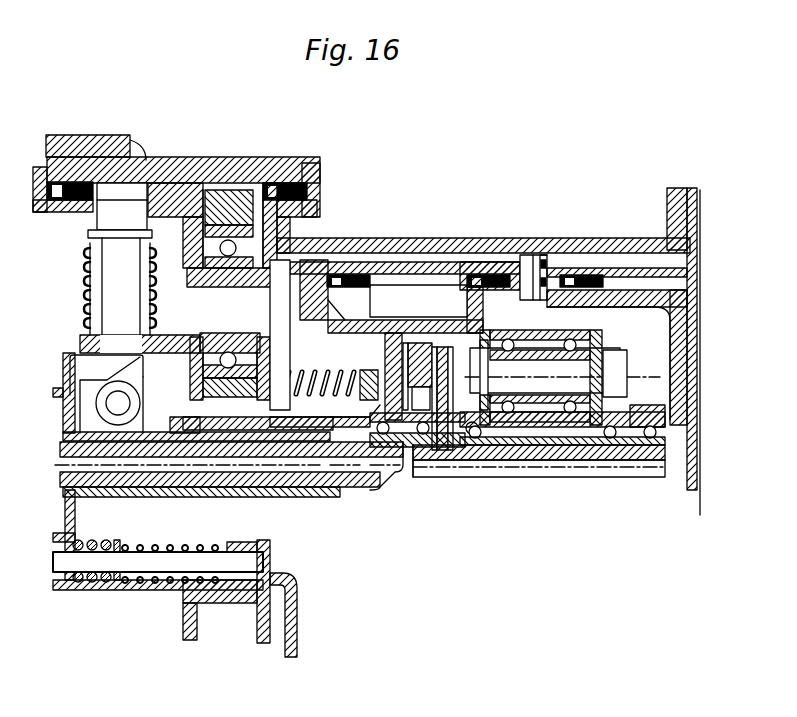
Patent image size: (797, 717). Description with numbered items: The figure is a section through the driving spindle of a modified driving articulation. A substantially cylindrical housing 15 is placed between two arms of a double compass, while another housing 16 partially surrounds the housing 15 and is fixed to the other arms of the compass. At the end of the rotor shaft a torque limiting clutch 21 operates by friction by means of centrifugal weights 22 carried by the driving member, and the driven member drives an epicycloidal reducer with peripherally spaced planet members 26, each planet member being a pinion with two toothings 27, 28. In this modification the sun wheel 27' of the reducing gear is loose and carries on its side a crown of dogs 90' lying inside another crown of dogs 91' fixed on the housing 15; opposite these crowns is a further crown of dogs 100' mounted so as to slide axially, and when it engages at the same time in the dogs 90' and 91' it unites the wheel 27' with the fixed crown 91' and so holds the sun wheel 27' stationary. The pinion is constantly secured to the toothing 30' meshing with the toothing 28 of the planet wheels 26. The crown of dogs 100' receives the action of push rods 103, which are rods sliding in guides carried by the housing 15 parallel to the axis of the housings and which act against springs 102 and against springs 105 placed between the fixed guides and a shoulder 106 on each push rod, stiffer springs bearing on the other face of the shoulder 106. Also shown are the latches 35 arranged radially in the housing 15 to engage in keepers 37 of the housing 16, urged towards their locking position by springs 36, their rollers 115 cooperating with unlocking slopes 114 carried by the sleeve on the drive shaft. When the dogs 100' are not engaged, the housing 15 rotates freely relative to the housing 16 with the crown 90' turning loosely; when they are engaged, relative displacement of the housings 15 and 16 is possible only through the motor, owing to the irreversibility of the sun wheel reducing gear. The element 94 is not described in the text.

The housing 15 is at (672, 210).
The housing 16 is at (255, 172).
The torque limiting clutch 21 is at (440, 345).
The centrifugal weights 22 is at (418, 345).
The planet members 26 is at (543, 465).
The toothing 27 is at (639, 340).
The sun wheel 27' is at (608, 362).
The toothing 28 is at (508, 476).
The toothing 30' is at (490, 252).
The latches 35 is at (123, 217).
The springs 36 is at (88, 268).
The keepers 37 is at (125, 190).
The crown of dogs 90' is at (591, 254).
The crown of dogs 91' is at (561, 249).
The tube 94 is at (185, 496).
The crown of dogs 100' is at (519, 238).
The springs 102 is at (323, 375).
The push rods 103 is at (170, 583).
The springs 105 is at (205, 612).
The shoulder 106 is at (108, 592).
The unlocking slopes 114 is at (138, 368).
The rollers 115 is at (132, 410).